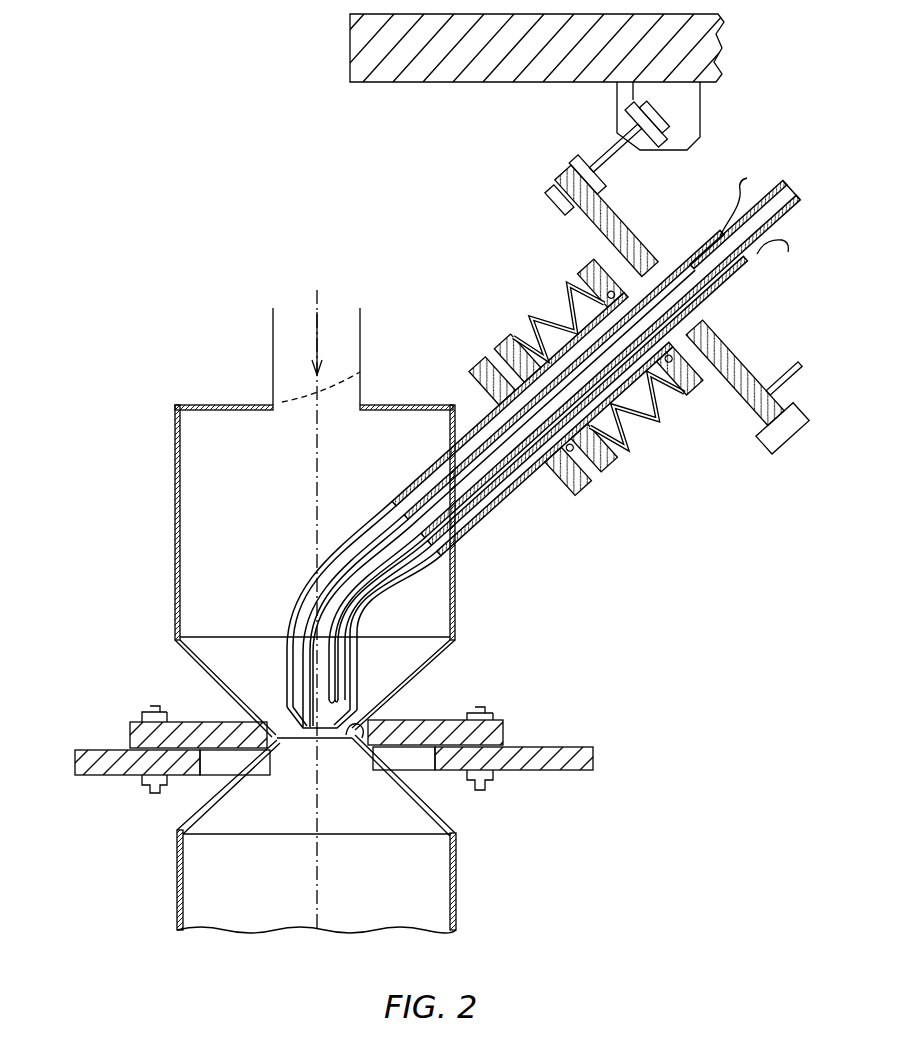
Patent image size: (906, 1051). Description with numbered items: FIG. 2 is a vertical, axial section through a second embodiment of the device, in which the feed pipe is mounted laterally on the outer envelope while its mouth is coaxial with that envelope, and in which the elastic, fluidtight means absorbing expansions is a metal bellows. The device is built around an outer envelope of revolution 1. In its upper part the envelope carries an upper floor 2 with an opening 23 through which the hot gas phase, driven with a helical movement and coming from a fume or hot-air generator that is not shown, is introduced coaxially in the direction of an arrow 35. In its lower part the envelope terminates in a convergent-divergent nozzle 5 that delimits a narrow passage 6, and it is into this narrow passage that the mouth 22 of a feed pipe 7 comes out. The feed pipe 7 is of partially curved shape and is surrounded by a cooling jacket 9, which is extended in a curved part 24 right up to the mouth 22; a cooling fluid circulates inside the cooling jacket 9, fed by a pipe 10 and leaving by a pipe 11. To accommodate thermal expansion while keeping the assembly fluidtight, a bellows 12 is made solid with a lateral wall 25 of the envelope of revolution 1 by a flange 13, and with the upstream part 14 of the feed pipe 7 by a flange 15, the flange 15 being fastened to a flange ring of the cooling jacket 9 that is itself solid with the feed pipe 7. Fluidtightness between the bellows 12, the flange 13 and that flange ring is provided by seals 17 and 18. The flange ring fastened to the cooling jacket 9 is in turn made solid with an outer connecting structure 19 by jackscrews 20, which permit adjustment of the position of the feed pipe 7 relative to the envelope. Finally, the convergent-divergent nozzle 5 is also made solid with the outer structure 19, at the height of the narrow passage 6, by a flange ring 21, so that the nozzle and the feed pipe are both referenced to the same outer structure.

The outer envelope of revolution 1 is at (182, 505).
The upper floor 2 is at (410, 402).
The convergent-divergent nozzle 5 is at (372, 758).
The narrow passage 6 is at (340, 742).
The feed pipe 7 is at (393, 540).
The cooling jacket 9 is at (423, 493).
The pipe 10 is at (771, 258).
The pipe 11 is at (744, 181).
The bellows 12 is at (650, 435).
The flange 13 is at (575, 492).
The upstream part 14 is at (705, 252).
The flange 15 is at (580, 252).
The seal 17 is at (608, 478).
The seal 18 is at (716, 362).
The outer connecting structure 19 is at (460, 79).
The jackscrews 20 is at (606, 155).
The flange ring 21 is at (500, 728).
The mouth 22 is at (312, 733).
The opening 23 is at (352, 390).
The curved part 24 is at (301, 625).
The lateral wall 25 is at (457, 600).
The arrow 35 is at (330, 302).